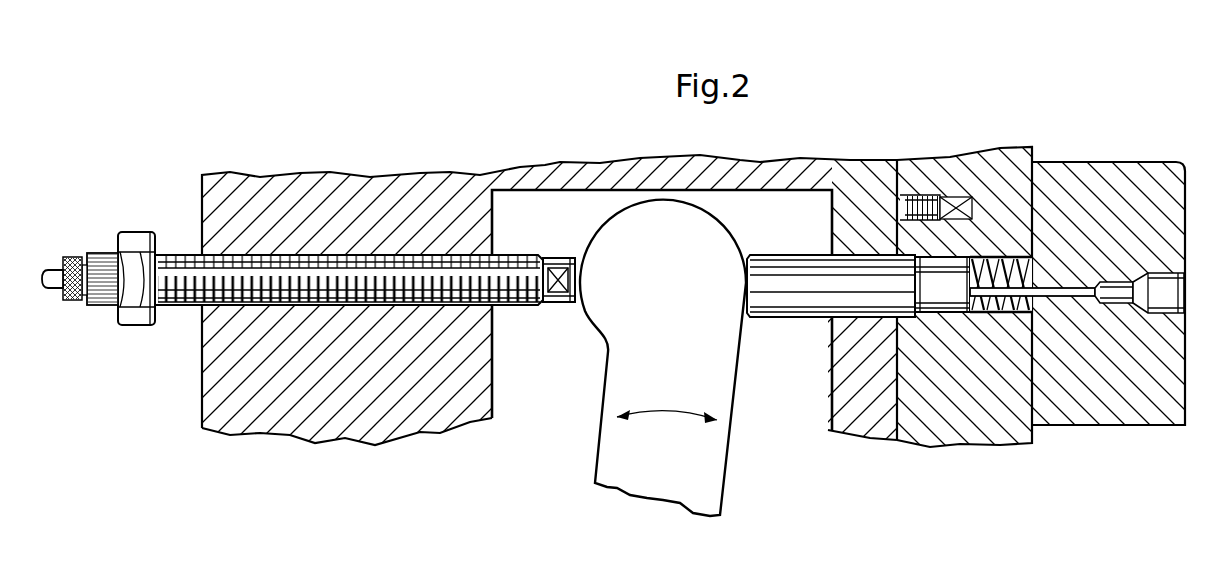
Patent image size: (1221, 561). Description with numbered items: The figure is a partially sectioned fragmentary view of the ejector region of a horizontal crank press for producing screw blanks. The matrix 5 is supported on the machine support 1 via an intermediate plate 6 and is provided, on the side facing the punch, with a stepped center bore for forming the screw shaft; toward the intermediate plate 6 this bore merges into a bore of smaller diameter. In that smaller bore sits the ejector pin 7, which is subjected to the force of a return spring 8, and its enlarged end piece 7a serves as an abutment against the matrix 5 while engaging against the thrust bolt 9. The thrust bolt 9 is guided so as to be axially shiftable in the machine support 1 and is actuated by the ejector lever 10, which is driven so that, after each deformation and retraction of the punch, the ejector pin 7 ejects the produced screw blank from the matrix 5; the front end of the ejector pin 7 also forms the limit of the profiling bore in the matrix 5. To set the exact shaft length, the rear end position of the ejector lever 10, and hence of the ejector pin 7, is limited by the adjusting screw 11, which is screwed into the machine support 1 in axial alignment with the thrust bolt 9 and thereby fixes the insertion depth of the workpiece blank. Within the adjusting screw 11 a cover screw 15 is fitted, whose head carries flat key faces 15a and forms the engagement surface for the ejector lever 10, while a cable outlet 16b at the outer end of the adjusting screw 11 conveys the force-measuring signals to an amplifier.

The machine support 1 is at (430, 200).
The matrix 5 is at (1115, 180).
The intermediate plate 6 is at (912, 175).
The ejector pin 7 is at (1068, 291).
The enlarged end piece 7a is at (950, 300).
The return spring 8 is at (996, 262).
The thrust bolt 9 is at (775, 277).
The ejector lever 10 is at (648, 218).
The adjusting screw 11 is at (310, 262).
The cover screw 15 is at (557, 242).
The key faces 15a is at (557, 302).
The cable outlet 16b is at (101, 262).